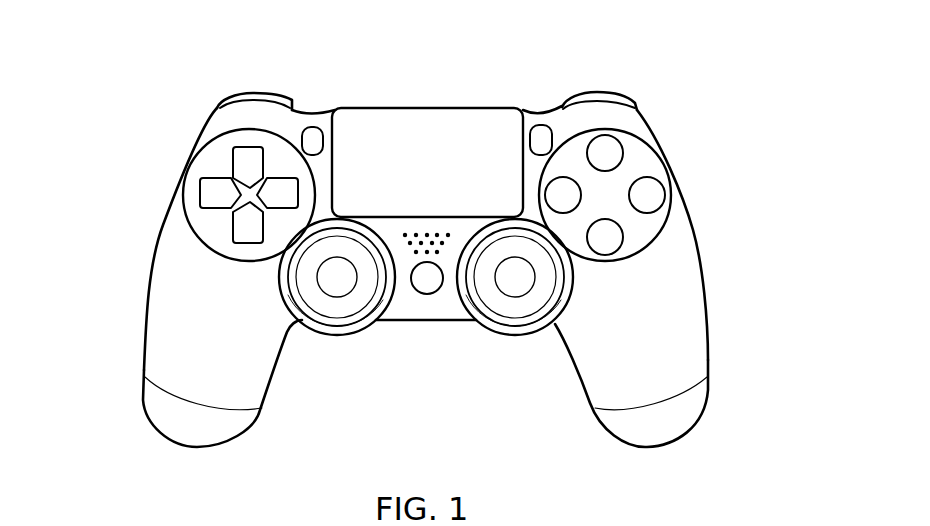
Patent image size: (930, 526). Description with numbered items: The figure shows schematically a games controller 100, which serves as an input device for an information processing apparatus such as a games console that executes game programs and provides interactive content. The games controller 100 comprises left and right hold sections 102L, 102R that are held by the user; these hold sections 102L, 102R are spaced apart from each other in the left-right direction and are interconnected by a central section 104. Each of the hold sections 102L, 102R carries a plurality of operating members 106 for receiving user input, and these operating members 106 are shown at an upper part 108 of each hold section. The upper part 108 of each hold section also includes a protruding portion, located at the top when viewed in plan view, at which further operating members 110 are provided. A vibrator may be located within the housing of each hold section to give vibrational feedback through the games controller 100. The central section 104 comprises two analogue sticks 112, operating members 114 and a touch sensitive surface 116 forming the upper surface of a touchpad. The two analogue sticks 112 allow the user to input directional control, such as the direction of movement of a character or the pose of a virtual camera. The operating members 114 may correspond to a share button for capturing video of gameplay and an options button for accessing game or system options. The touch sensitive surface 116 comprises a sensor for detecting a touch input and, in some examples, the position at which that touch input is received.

The games controller 100 is at (163, 225).
The left hold section 102L is at (143, 338).
The right hold section 102R is at (708, 350).
The central section 104 is at (392, 108).
The operating members 106 is at (665, 196).
The upper part 108 is at (650, 145).
The further operating members 110 is at (253, 95).
The analogue sticks 112 is at (503, 300).
The operating members 114 is at (313, 124).
The touch sensitive surface 116 is at (453, 122).